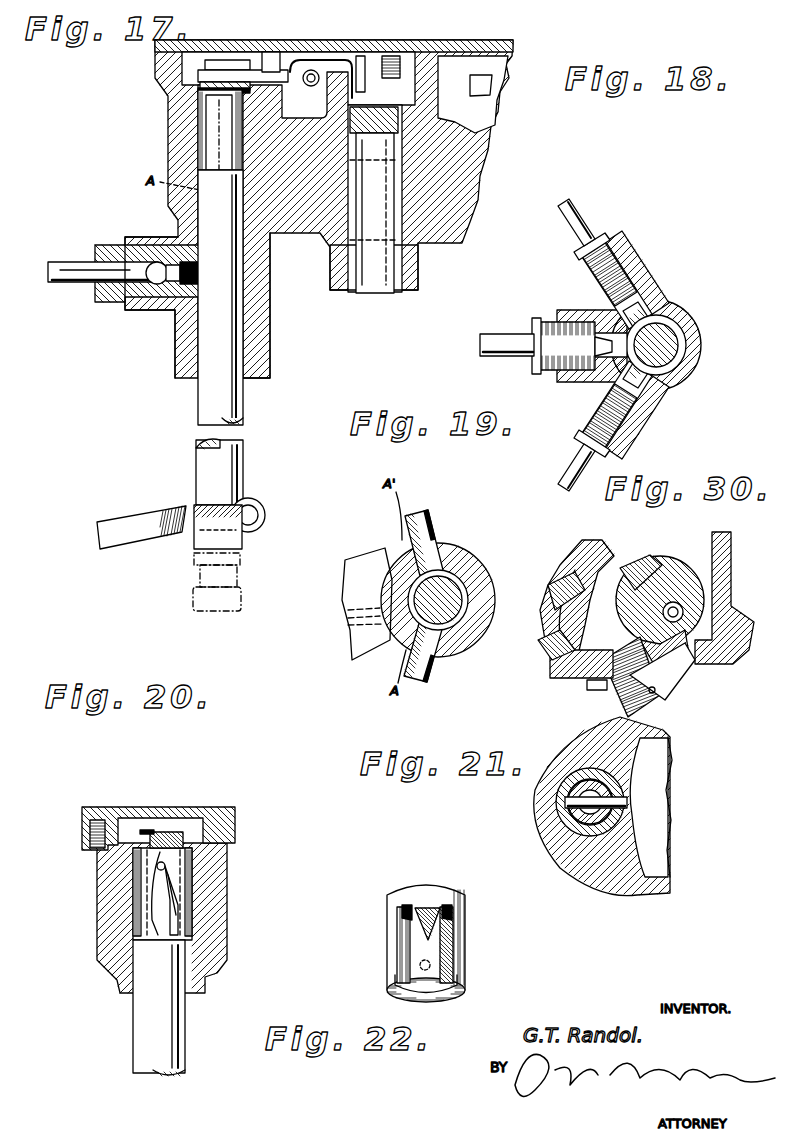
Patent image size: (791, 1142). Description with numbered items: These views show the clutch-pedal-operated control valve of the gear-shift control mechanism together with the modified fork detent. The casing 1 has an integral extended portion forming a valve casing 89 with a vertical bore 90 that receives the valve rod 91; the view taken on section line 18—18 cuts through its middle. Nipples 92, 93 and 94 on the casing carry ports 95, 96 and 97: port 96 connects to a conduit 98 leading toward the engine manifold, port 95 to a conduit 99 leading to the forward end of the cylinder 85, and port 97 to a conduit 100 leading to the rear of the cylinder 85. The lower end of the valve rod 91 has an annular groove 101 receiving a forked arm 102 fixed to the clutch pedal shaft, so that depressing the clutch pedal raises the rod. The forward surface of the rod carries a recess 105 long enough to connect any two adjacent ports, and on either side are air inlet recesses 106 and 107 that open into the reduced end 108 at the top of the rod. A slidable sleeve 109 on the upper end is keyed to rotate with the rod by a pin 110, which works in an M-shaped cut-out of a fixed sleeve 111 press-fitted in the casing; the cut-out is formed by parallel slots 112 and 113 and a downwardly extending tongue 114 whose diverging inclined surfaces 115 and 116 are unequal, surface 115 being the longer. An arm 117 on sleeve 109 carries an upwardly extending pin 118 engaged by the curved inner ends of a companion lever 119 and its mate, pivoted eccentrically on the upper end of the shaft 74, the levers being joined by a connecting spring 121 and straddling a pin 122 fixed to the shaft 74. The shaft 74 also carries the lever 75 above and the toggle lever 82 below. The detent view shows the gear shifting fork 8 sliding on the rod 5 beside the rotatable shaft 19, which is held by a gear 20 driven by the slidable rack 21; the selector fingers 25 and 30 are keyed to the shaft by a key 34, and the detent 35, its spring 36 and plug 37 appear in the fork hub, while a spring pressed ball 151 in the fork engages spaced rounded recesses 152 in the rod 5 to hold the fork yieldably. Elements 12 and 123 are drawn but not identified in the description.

In FIG. 17, the casing 1 is at (460, 182).
In FIG. 30, the rod 5 is at (675, 603).
In FIG. 30, the gear shifting fork 8 is at (660, 568).
In FIG. 30, the support block 12 is at (745, 626).
In FIG. 17, the section line 18- 18 is at (48, 272).
In FIG. 17, the rotatable shaft 19 is at (250, 190).
In FIG. 30, the rotatable shaft 19 is at (570, 580).
In FIG. 17, the gear 20 is at (222, 58).
In FIG. 17, the slidable rack 21 is at (182, 105).
In FIG. 30, the sector shaped finger 25 is at (592, 556).
In FIG. 30, the sector shaped finger 30 is at (598, 654).
In FIG. 30, the key 34 is at (556, 645).
In FIG. 30, the detent 35 is at (590, 686).
In FIG. 30, the spring 36 is at (628, 690).
In FIG. 30, the plug 37 is at (652, 700).
In FIG. 17, the shaft 74 is at (377, 282).
In FIG. 17, the lever 75 is at (440, 66).
In FIG. 17, the lever 82 is at (346, 290).
In FIG. 20, the cylinder 85 is at (212, 940).
In FIG. 17, the valve casing 89 is at (190, 345).
In FIG. 18, the valve casing 89 is at (690, 360).
In FIG. 19, the valve casing 89 is at (470, 568).
In FIG. 21, the valve casing 89 is at (566, 762).
In FIG. 17, the vertical bore 90 is at (246, 322).
In FIG. 17, the valve rod 91 is at (226, 442).
In FIG. 18, the valve rod 91 is at (680, 348).
In FIG. 19, the valve rod 91 is at (449, 607).
In FIG. 21, the valve rod 91 is at (580, 834).
In FIG. 20, the valve rod 91 is at (140, 1030).
In FIG. 18, the nipple 92 is at (630, 262).
In FIG. 19, the nipple 92 is at (436, 542).
In FIG. 18, the nipple 93 is at (566, 312).
In FIG. 18, the nipple 94 is at (588, 400).
In FIG. 19, the nipple 94 is at (388, 650).
In FIG. 18, the port 95 is at (657, 290).
In FIG. 17, the port 96 is at (186, 308).
In FIG. 18, the port 96 is at (590, 258).
In FIG. 18, the port 97 is at (650, 400).
In FIG. 17, the conduit 98 is at (76, 268).
In FIG. 18, the conduit 98 is at (502, 336).
In FIG. 18, the conduit 99 is at (586, 222).
In FIG. 18, the conduit 100 is at (580, 480).
In FIG. 17, the annular groove 101 is at (244, 535).
In FIG. 17, the forked arm 102 is at (166, 536).
In FIG. 17, the recess 105 is at (196, 286).
In FIG. 18, the recess 105 is at (672, 322).
In FIG. 17, the air inlet recess 106 is at (220, 253).
In FIG. 18, the air inlet recess 106 is at (665, 385).
In FIG. 19, the air inlet recess 106 is at (437, 662).
In FIG. 18, the air inlet recess 107 is at (688, 330).
In FIG. 19, the air inlet recess 107 is at (464, 571).
In FIG. 17, the reduced end 108 is at (214, 150).
In FIG. 17, the slidable sleeve 109 is at (198, 131).
In FIG. 21, the slidable sleeve 109 is at (597, 845).
In FIG. 20, the slidable sleeve 109 is at (145, 883).
In FIG. 17, the pin 110 is at (198, 90).
In FIG. 21, the pin 110 is at (628, 802).
In FIG. 20, the pin 110 is at (150, 832).
In FIG. 22, the pin 110 is at (404, 908).
In FIG. 20, the sleeve 111 is at (133, 865).
In FIG. 22, the sleeve 111 is at (452, 896).
In FIG. 20, the slot 112 is at (158, 890).
In FIG. 22, the slot 112 is at (398, 930).
In FIG. 21, the slot 113 is at (628, 762).
In FIG. 20, the slot 113 is at (180, 892).
In FIG. 22, the slot 113 is at (458, 903).
In FIG. 20, the downwardly extending tongue 114 is at (172, 873).
In FIG. 22, the downwardly extending tongue 114 is at (428, 915).
In FIG. 22, the inclined surface 115 is at (428, 934).
In FIG. 22, the inclined surface 116 is at (444, 940).
In FIG. 17, the arm 117 is at (250, 72).
In FIG. 20, the arm 117 is at (185, 832).
In FIG. 17, the upwardly extending pin 118 is at (272, 60).
In FIG. 17, the companion lever 119 is at (302, 62).
In FIG. 17, the connecting spring 121 is at (360, 56).
In FIG. 17, the pin 122 is at (391, 56).
In FIG. 17, the top plate 123 is at (495, 46).
In FIG. 20, the top plate 123 is at (146, 806).
In FIG. 30, the spring pressed ball 151 is at (672, 650).
In FIG. 30, the rounded recesses 152 is at (648, 585).